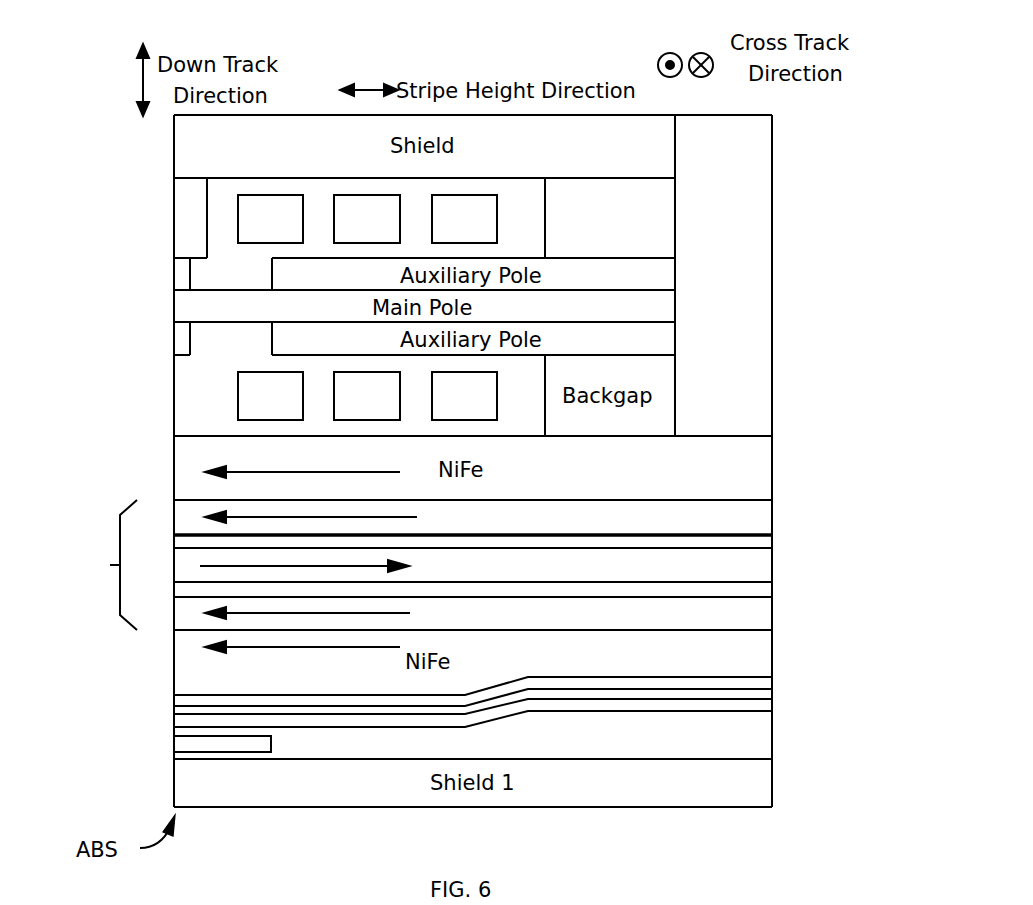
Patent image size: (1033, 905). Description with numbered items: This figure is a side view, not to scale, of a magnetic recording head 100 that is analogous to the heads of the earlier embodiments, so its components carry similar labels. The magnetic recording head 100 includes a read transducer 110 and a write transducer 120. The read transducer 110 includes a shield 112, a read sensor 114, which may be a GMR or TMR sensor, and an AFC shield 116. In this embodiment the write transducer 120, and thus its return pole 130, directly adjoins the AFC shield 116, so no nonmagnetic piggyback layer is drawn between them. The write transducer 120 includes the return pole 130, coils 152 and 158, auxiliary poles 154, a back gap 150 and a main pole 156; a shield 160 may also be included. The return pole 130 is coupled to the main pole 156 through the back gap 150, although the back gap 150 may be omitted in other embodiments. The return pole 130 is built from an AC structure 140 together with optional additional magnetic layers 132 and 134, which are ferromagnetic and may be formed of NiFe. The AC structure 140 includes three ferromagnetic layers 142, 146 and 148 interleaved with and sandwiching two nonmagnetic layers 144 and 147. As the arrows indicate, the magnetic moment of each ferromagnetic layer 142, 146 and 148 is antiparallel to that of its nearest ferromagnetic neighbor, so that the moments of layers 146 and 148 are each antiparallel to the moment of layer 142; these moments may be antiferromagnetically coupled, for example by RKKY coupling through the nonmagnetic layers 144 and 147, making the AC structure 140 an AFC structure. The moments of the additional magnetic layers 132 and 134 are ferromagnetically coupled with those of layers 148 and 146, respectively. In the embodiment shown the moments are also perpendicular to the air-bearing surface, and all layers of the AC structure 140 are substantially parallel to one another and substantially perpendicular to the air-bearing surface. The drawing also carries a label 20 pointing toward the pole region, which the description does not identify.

The magnetic recording head 100 is at (502, 43).
The write transducer 120 is at (95, 161).
The coil 158 is at (210, 218).
The main pole 156 is at (174, 307).
The main pole 20 is at (92, 304).
The coil 152 is at (200, 405).
The auxiliary pole 154 is at (675, 340).
The back gap 150 is at (675, 412).
The shield 160 is at (675, 162).
The additional magnetic layer 134 is at (174, 453).
The return pole 130 is at (838, 495).
The ferromagnetic layer 146 is at (174, 517).
The nonmagnetic layer 144 is at (772, 542).
The AC structure 140 is at (99, 565).
The nonmagnetic layer 147 is at (772, 588).
The ferromagnetic layer 142 is at (174, 565).
The ferromagnetic layer 148 is at (772, 613).
The additional magnetic layer 132 is at (772, 650).
The AFC shield 116 is at (808, 697).
The read sensor 114 is at (174, 742).
The read transducer 110 is at (125, 713).
The shield 112 is at (772, 788).